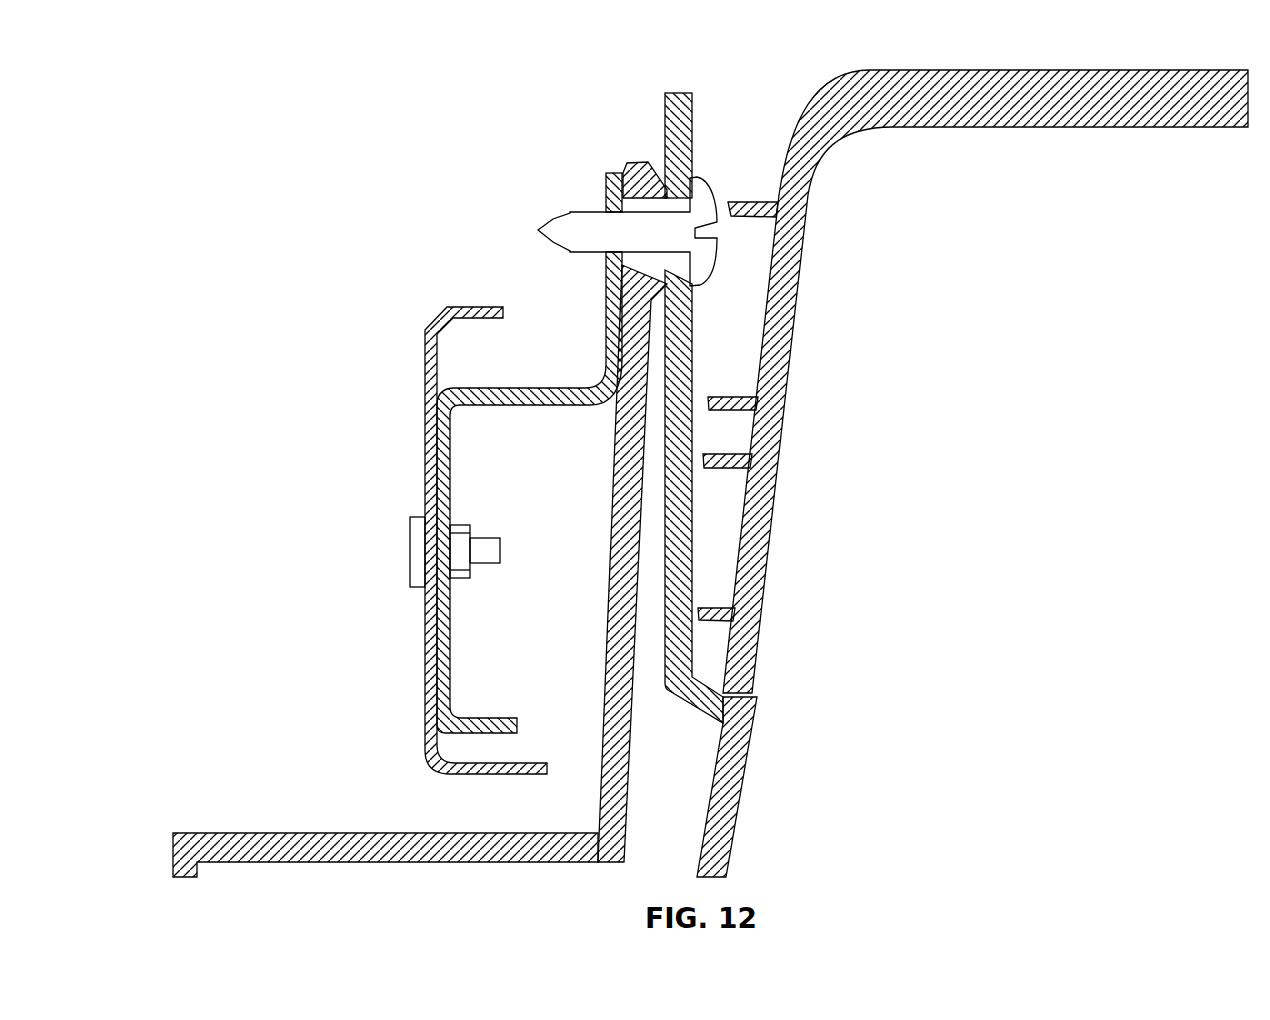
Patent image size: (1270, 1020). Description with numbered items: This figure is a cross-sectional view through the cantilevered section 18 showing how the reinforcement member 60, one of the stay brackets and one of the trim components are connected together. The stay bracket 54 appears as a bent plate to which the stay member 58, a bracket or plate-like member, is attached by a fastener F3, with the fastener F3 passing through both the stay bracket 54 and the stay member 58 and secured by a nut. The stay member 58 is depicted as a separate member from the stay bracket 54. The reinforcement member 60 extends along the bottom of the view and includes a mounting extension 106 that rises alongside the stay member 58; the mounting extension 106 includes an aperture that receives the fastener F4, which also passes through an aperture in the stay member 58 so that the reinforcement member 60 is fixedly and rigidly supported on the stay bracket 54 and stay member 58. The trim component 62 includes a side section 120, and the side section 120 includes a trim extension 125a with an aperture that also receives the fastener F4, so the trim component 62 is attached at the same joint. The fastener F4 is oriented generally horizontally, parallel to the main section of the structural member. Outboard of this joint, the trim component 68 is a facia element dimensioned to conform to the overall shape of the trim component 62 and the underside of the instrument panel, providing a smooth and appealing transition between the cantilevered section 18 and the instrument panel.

The cantilevered section 18 is at (870, 558).
The stay bracket 54 is at (425, 340).
The stay member 58 is at (517, 405).
The reinforcement member 60 is at (336, 833).
The trim component 62 is at (742, 806).
The trim component 68 is at (786, 400).
The mounting extension 106 is at (618, 477).
The side section 120 is at (750, 743).
The trim extension 125a is at (692, 342).
The fastener F3 is at (411, 543).
The fastener F4 is at (590, 212).